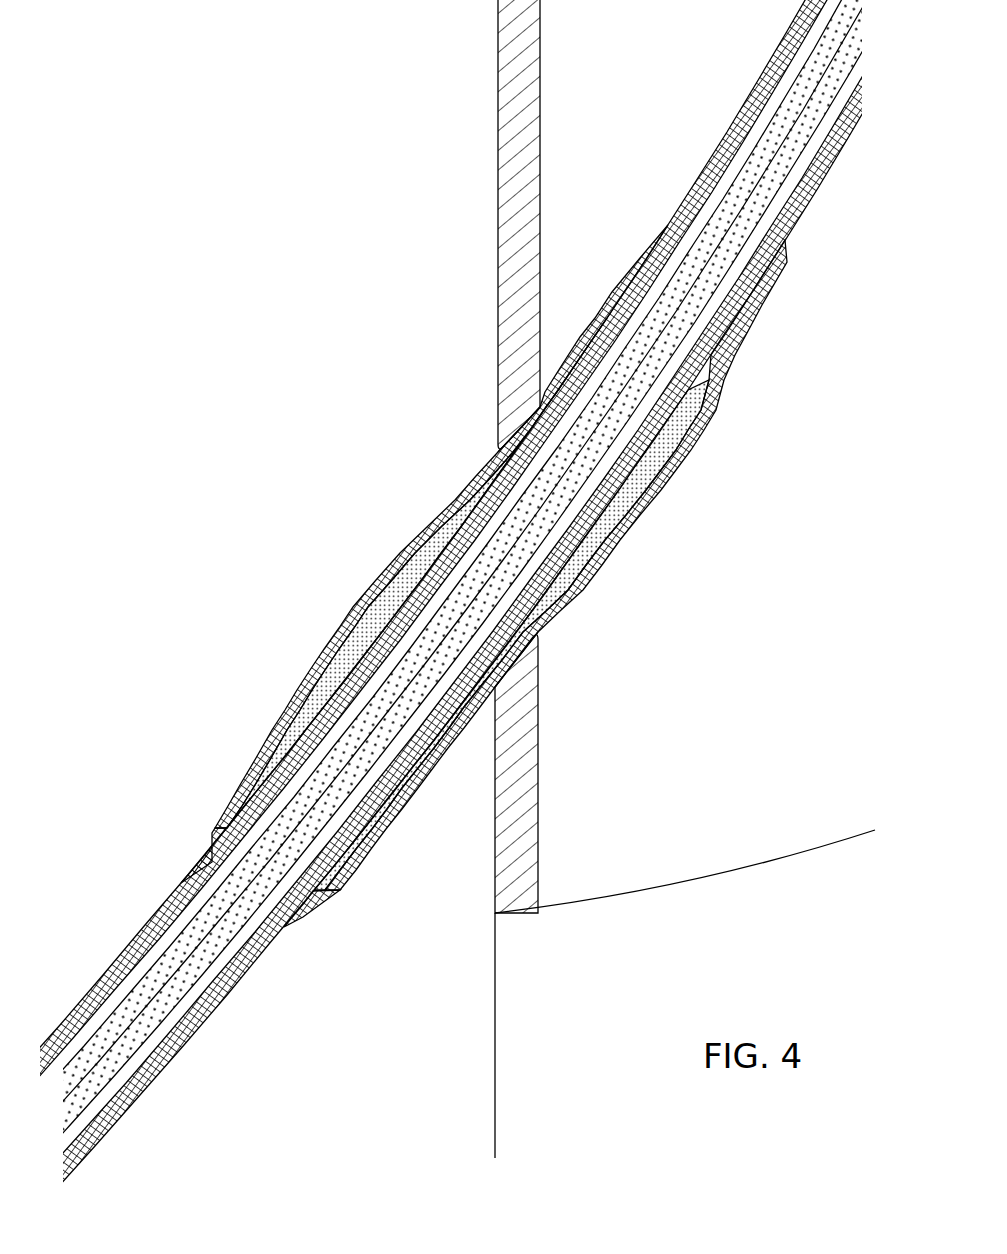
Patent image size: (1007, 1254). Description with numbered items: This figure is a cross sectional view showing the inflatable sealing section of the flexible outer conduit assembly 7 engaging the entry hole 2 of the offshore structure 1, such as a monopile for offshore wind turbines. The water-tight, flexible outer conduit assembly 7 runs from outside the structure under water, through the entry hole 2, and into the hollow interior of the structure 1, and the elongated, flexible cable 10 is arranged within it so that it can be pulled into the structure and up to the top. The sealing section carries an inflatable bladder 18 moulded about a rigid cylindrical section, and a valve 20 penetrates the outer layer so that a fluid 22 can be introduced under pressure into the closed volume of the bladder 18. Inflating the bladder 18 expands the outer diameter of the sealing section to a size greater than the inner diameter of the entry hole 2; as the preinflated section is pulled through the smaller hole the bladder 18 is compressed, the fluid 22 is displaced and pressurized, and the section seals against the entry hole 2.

The offshore structure 1 is at (496, 324).
The entry hole 2 is at (553, 645).
The flexible outer conduit assembly 7 is at (748, 115).
The cable 10 is at (213, 898).
The inflatable bladder 18 is at (272, 732).
The valve 20 is at (225, 820).
The fluid 22 is at (353, 612).